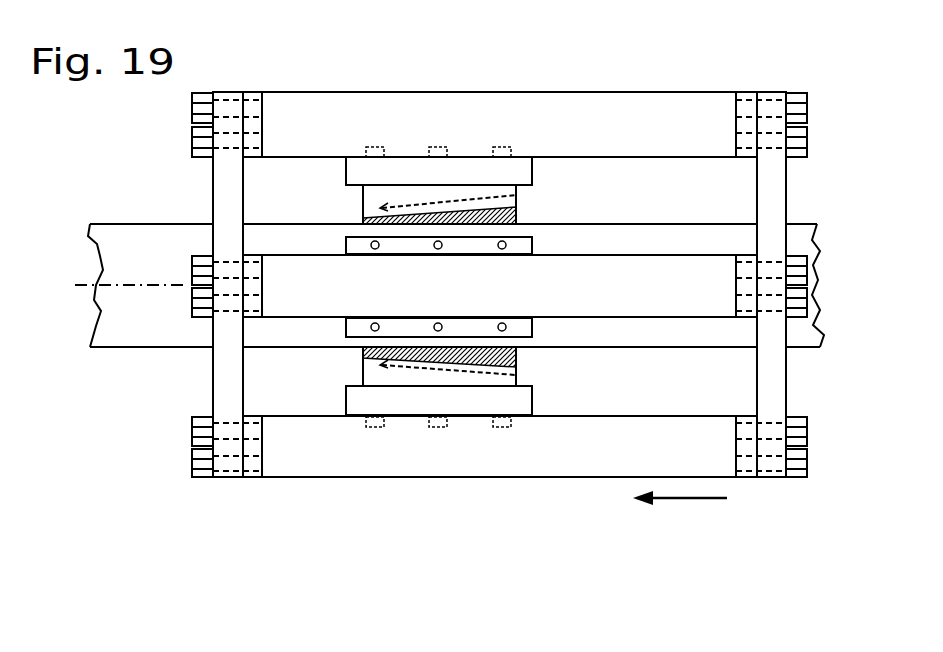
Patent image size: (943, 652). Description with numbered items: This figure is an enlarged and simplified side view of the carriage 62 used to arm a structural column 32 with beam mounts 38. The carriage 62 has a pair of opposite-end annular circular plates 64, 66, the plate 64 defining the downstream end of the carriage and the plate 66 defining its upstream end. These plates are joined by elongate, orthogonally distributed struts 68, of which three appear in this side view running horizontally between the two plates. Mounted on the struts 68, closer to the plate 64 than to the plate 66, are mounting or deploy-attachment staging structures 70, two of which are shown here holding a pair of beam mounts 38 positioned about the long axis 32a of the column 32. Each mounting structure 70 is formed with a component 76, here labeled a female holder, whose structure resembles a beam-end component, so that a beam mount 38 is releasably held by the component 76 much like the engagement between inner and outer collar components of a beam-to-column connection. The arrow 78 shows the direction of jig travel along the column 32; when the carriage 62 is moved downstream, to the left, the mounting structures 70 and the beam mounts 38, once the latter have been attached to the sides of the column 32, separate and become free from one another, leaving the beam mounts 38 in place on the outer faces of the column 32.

The column 32 is at (133, 238).
The face of column 32a is at (143, 290).
The beam mount 38 is at (517, 216).
The carriage 62 is at (725, 67).
The plate 64 is at (213, 183).
The plate 66 is at (778, 172).
The struts 68 is at (487, 108).
The mounting structure 70 is at (528, 367).
The component 76 is at (370, 200).
The arrow 78 is at (677, 501).